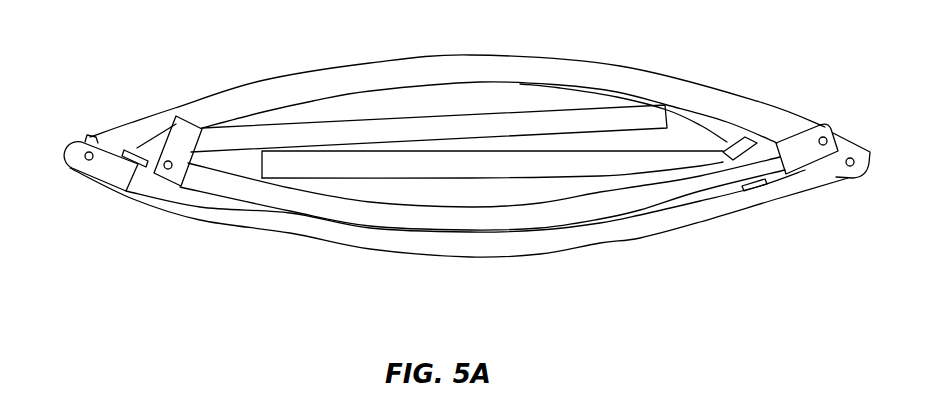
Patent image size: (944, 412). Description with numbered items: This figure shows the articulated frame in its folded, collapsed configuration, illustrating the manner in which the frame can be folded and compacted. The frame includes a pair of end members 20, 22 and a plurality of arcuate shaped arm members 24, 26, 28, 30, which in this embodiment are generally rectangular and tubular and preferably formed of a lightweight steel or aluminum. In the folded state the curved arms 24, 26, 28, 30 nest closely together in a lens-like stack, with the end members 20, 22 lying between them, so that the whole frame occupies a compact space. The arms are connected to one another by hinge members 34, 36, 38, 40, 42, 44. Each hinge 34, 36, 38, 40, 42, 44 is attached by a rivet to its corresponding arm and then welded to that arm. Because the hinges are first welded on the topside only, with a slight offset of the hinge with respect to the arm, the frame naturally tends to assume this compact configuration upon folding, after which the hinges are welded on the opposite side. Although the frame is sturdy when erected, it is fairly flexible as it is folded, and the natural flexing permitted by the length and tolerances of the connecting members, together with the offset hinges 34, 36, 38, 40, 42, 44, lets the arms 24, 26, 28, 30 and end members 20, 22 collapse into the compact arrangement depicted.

The end member 20 is at (357, 135).
The end member 22 is at (417, 167).
The arcuate shaped arm member 24 is at (285, 202).
The arcuate shaped arm member 26 is at (690, 93).
The arcuate shaped arm member 28 is at (603, 238).
The arcuate shaped arm member 30 is at (730, 120).
The hinge member 34 is at (179, 145).
The hinge member 36 is at (796, 149).
The hinge member 38 is at (108, 168).
The hinge member 40 is at (860, 157).
The hinge member 42 is at (140, 153).
The hinge member 44 is at (747, 148).